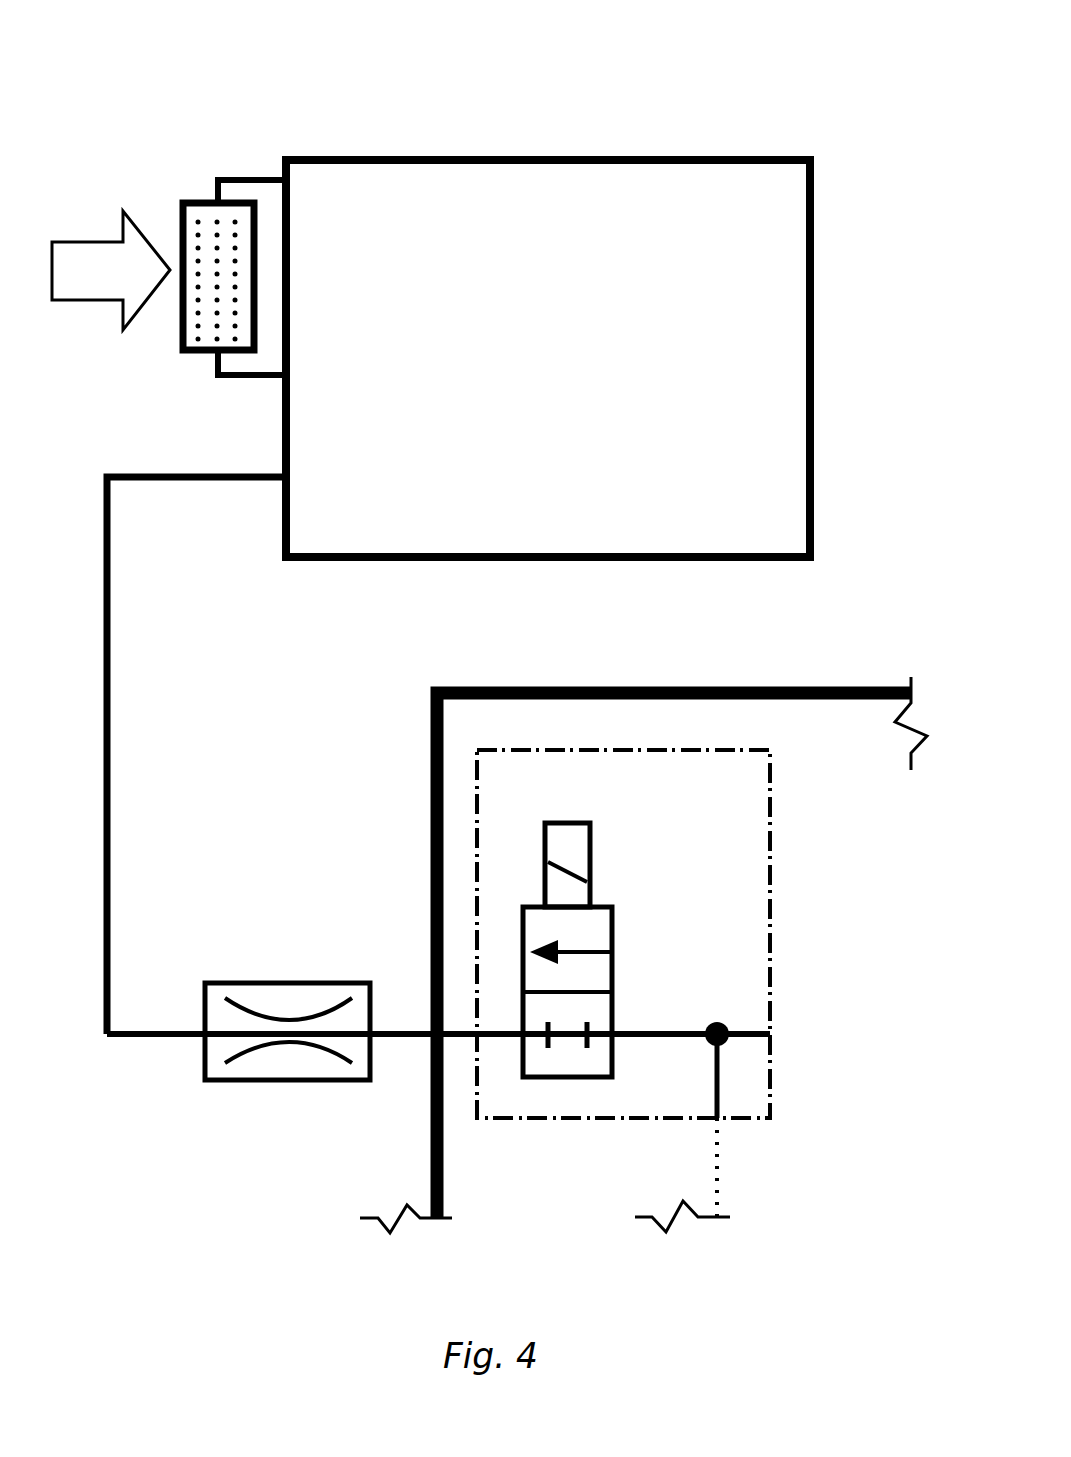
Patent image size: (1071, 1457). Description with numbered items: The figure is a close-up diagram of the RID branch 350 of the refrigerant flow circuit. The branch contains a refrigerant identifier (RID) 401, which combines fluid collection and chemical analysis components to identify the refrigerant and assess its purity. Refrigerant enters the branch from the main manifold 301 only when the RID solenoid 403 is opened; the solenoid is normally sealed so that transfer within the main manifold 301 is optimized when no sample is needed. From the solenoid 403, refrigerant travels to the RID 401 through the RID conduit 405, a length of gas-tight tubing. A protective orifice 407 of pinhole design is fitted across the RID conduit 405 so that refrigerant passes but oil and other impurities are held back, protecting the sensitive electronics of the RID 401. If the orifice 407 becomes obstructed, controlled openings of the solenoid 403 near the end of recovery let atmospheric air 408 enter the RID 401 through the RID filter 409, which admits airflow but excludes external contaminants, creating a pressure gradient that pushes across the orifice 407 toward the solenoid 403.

The RID branch 350 is at (66, 102).
The refrigerant identifier 401 is at (593, 352).
The RID filter 409 is at (197, 200).
The air 408 is at (125, 282).
The RID conduit 405 is at (163, 475).
The protective orifice 407 is at (295, 983).
The main manifold 301 is at (875, 690).
The RID solenoid 403 is at (592, 843).